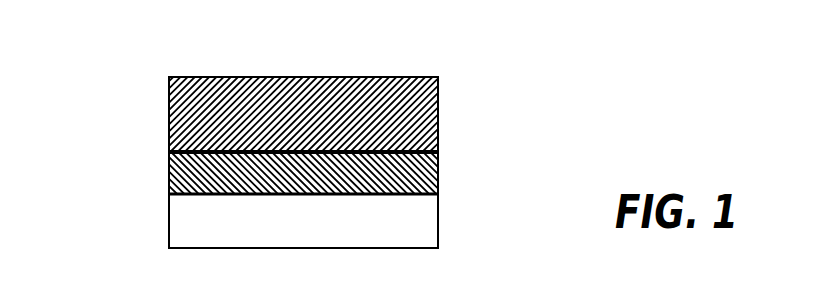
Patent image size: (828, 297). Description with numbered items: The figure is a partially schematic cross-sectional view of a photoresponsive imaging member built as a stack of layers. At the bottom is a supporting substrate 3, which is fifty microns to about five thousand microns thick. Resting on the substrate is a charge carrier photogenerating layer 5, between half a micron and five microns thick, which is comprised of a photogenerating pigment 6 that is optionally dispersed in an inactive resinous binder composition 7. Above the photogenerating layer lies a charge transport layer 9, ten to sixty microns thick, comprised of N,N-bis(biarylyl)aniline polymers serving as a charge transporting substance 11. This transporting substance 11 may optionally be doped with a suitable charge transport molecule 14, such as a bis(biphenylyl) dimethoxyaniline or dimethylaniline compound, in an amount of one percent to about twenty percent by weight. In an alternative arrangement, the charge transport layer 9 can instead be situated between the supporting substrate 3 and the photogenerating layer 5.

The supporting substrate 3 is at (169, 220).
The charge carrier photogenerating layer 5 is at (438, 189).
The photogenerating pigment 6 is at (440, 170).
The inactive resinous binder composition 7 is at (190, 172).
The charge transport layer 9 is at (438, 118).
The charge transporting substance 11 is at (203, 92).
The charge transport molecule 14 is at (373, 98).